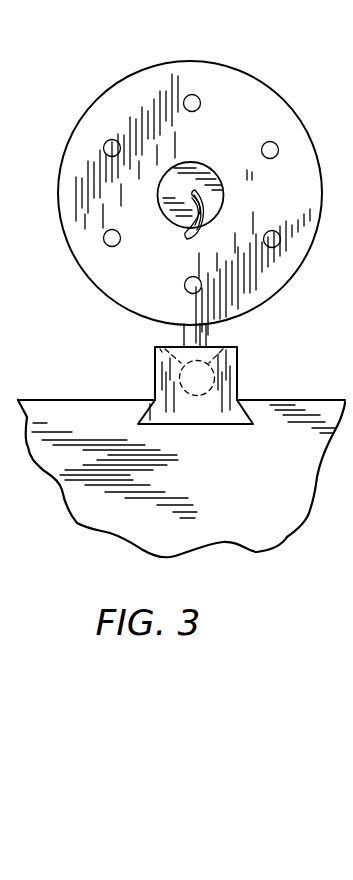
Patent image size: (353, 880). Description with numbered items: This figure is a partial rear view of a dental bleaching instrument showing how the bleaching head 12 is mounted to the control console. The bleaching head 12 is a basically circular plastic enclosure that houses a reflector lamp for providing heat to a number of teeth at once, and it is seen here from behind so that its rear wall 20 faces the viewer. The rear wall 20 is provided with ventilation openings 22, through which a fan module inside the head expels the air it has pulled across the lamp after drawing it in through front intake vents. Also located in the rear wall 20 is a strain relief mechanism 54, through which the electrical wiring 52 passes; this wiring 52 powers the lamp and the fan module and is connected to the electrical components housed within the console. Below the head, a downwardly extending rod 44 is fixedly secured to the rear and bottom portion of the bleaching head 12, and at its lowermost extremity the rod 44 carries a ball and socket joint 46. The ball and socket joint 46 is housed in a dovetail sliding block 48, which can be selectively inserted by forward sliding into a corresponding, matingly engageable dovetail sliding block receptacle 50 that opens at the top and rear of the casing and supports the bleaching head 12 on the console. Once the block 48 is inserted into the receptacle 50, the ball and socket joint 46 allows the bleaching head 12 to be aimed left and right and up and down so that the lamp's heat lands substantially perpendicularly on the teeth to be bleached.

The bleaching head 12 is at (172, 58).
The ventilation openings 22 is at (105, 142).
The rear wall 20 is at (190, 150).
The strain relief mechanism 54 is at (199, 165).
The electrical wiring 52 is at (185, 208).
The rod 44 is at (203, 334).
The ball and socket joint 46 is at (168, 365).
The dovetail sliding block 48 is at (238, 377).
The dovetail sliding block receptacle 50 is at (148, 413).